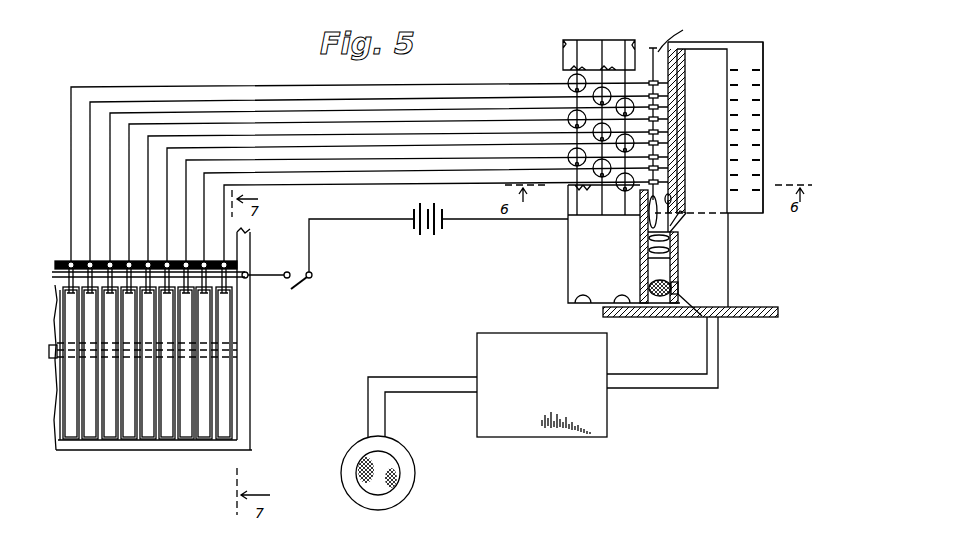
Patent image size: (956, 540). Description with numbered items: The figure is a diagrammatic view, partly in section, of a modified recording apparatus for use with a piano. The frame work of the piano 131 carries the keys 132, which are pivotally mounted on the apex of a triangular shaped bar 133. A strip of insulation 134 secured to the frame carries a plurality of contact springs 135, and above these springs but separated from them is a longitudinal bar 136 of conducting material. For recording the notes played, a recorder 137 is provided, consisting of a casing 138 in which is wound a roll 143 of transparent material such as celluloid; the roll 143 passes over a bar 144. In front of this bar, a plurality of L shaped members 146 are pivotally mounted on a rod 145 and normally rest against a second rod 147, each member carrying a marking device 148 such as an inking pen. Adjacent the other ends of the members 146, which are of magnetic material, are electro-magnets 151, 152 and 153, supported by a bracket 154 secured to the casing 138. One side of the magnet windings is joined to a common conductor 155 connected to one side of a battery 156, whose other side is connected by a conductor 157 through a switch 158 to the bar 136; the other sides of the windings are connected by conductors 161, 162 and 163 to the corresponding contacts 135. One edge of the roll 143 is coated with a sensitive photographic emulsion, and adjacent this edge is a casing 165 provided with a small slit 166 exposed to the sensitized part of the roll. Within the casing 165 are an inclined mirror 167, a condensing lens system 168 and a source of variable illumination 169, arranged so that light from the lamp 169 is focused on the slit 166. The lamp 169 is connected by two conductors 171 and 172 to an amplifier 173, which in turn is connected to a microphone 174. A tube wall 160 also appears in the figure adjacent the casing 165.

The frame work of the piano 131 is at (203, 452).
The keys 132 is at (137, 432).
The triangular shaped bar 133 is at (52, 358).
The strip of insulation 134 is at (55, 264).
The contact springs 135 is at (73, 260).
The longitudinal bar 136 is at (53, 278).
The recorder 137 is at (805, 132).
The casing 138 is at (760, 315).
The roll 143 is at (762, 56).
The bar 144 is at (730, 268).
The rod 145 is at (682, 30).
The L shaped members 146 is at (660, 80).
The second rod 147 is at (652, 48).
The marking device 148 is at (665, 105).
The electro-magnet 151 is at (568, 158).
The electro-magnet 152 is at (597, 178).
The electro-magnet 153 is at (648, 215).
The bracket 154 is at (563, 44).
The common conductor 155 is at (577, 65).
The battery 156 is at (434, 234).
The conductor 157 is at (309, 258).
The switch 158 is at (300, 286).
The tube wall 160 is at (679, 246).
The conductor 161 is at (372, 160).
The conductor 162 is at (397, 172).
The conductor 163 is at (436, 184).
The casing 165 is at (650, 249).
The slit 166 is at (680, 210).
The inclined mirror 167 is at (640, 236).
The condensing lens system 168 is at (573, 295).
The source of variable illumination 169 is at (650, 318).
The conductor 171 is at (660, 385).
The conductor 172 is at (695, 390).
The amplifier 173 is at (522, 435).
The microphone 174 is at (410, 490).